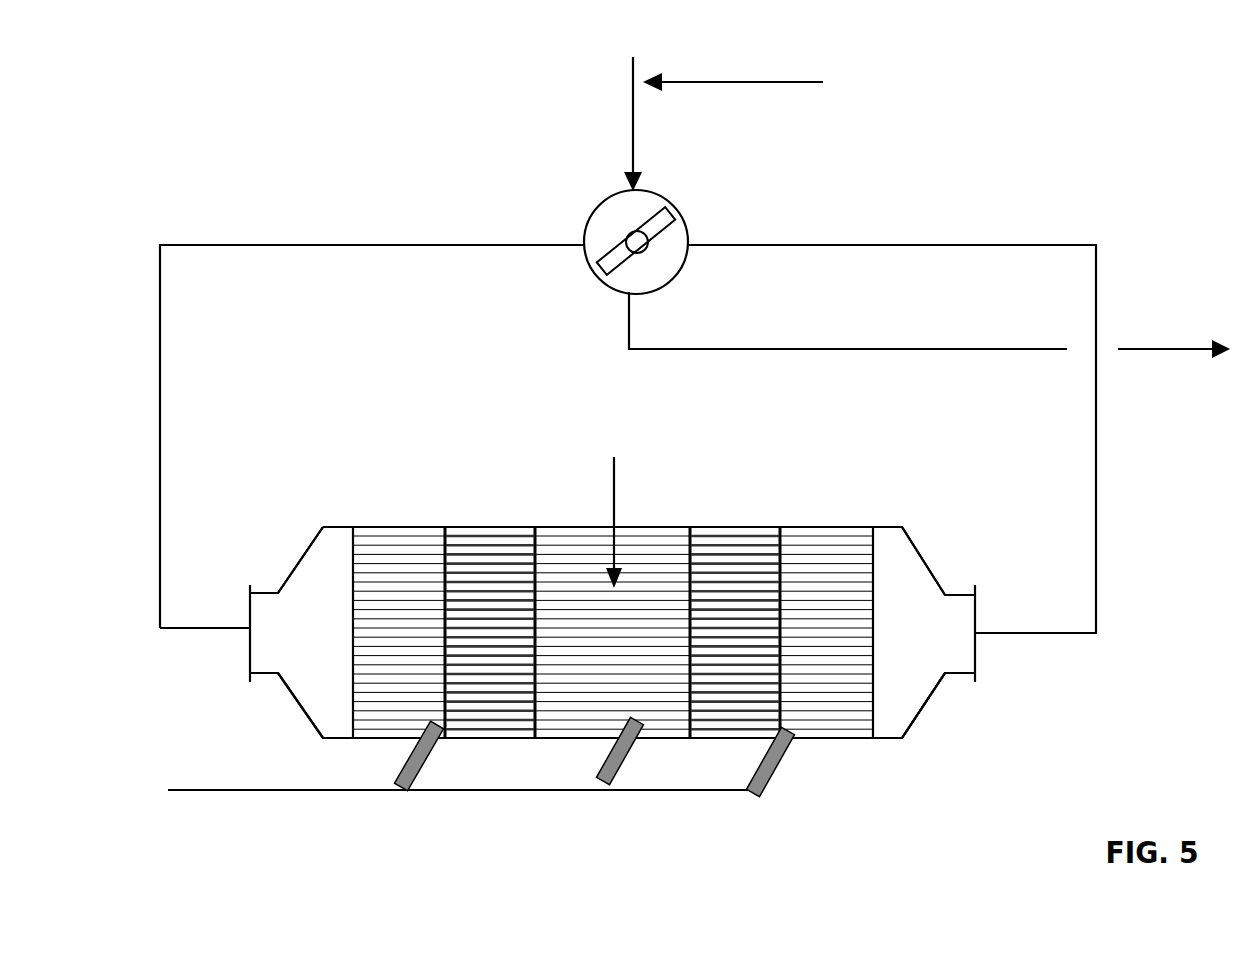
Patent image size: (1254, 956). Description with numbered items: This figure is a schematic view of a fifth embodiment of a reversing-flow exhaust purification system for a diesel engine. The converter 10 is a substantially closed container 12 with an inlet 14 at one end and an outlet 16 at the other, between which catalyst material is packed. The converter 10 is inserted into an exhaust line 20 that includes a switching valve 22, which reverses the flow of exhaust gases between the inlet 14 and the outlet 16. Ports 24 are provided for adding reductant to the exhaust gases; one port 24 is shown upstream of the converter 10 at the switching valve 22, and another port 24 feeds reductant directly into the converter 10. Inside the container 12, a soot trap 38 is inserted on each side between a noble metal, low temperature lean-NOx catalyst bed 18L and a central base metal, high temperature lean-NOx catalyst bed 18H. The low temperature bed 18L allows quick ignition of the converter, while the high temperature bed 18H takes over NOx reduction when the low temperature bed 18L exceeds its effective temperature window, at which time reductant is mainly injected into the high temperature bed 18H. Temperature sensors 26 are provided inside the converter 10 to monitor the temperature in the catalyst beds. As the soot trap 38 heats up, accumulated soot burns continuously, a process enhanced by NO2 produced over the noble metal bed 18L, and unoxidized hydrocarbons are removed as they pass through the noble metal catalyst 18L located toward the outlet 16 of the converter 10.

The converter 10 is at (896, 503).
The container 12 is at (928, 560).
The inlet 14 is at (310, 580).
The outlet 16 is at (907, 708).
The low temperature lean-NOx catalyst bed 18L is at (380, 558).
The high temperature lean-NOx catalyst bed 18H is at (575, 550).
The exhaust line 20 is at (628, 103).
The switching valve 22 is at (678, 232).
The ports 24 is at (743, 77).
The temperature sensors 26 is at (747, 777).
The soot trap 38 is at (463, 558).